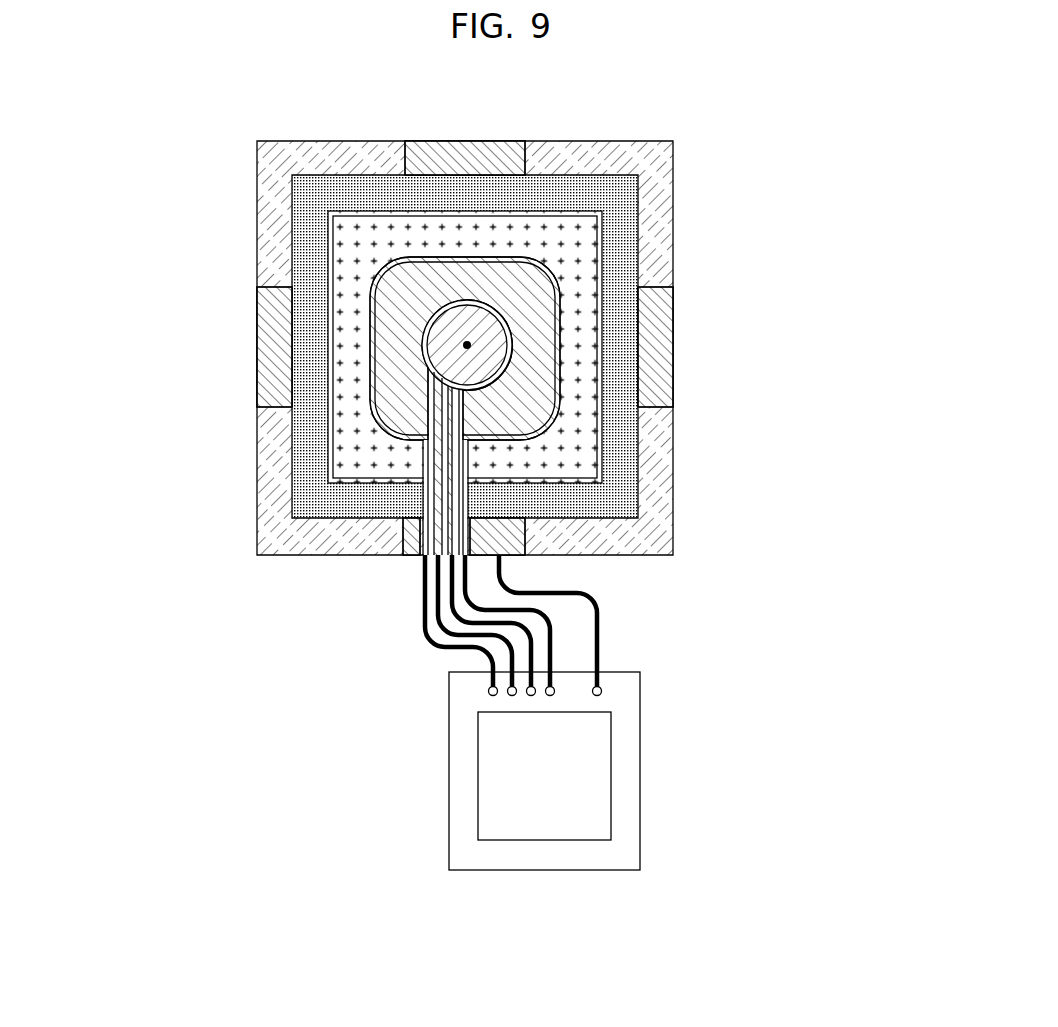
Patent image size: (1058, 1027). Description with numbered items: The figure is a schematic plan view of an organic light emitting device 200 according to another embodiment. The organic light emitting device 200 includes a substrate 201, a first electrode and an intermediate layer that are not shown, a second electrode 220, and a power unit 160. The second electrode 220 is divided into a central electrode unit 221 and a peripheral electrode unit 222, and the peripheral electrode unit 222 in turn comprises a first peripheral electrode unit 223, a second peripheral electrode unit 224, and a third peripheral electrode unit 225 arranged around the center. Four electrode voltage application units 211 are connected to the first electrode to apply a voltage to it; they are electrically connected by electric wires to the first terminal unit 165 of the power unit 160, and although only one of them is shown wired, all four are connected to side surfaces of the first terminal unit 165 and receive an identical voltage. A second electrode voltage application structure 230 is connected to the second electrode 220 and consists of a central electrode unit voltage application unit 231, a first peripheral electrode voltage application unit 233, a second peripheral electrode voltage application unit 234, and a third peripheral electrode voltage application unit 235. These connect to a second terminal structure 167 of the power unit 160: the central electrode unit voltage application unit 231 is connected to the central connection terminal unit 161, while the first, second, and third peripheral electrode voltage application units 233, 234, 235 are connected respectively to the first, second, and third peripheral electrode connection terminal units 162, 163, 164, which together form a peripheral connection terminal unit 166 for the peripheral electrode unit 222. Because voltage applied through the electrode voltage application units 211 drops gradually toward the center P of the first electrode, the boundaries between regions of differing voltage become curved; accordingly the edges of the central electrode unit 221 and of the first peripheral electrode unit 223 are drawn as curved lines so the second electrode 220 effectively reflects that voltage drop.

The organic light emitting device 200 is at (494, 345).
The substrate 201 is at (663, 203).
The electrode voltage application unit 211 is at (467, 143).
The second electrode 220 is at (581, 347).
The central electrode unit 221 is at (500, 372).
The peripheral electrode unit 222 is at (520, 347).
The first peripheral electrode unit 223 is at (548, 405).
The second peripheral electrode unit 224 is at (603, 480).
The third peripheral electrode unit 225 is at (622, 490).
The second electrode voltage application structure 230 is at (293, 463).
The central electrode unit voltage application unit 231 is at (438, 452).
The first peripheral electrode voltage application unit 233 is at (452, 477).
The second peripheral electrode voltage application unit 234 is at (462, 500).
The third peripheral electrode voltage application unit 235 is at (412, 522).
The center P is at (467, 345).
The power unit 160 is at (497, 712).
The central connection terminal unit 161 is at (493, 686).
The first peripheral electrode connection terminal unit 162 is at (531, 696).
The second peripheral electrode connection terminal unit 163 is at (550, 696).
The third peripheral electrode connection terminal unit 164 is at (512, 696).
The first terminal unit 165 is at (600, 695).
The peripheral connection terminal unit 166 is at (433, 735).
The second terminal structure 167 is at (401, 725).